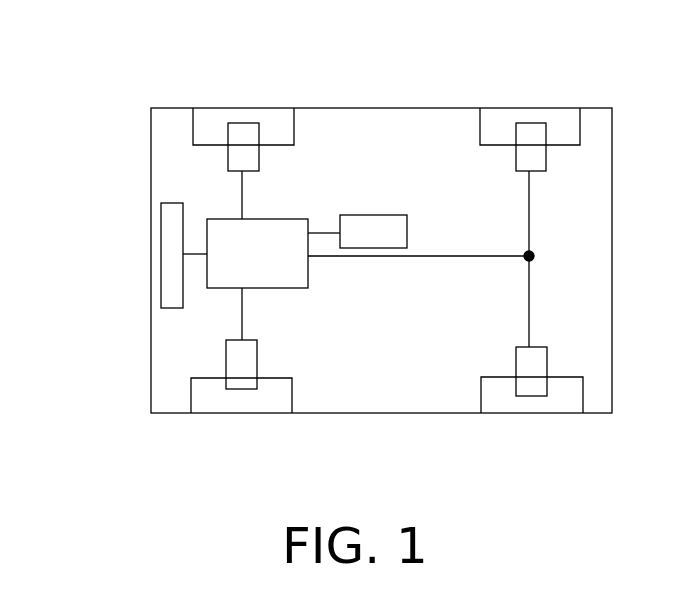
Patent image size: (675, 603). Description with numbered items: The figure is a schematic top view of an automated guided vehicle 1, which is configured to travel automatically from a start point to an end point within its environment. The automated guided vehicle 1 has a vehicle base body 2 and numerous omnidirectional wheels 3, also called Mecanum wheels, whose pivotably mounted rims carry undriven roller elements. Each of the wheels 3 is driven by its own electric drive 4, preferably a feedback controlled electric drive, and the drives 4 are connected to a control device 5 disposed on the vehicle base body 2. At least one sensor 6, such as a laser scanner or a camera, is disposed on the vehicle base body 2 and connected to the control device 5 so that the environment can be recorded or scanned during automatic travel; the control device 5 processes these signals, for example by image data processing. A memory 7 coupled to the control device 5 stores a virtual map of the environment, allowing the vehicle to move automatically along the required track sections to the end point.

The automated guided vehicle 1 is at (92, 60).
The vehicle base body 2 is at (372, 132).
The omnidirectional wheel 3 is at (214, 110).
The electric drive 4 is at (251, 153).
The control device 5 is at (358, 259).
The sensor 6 is at (166, 247).
The memory 7 is at (400, 233).